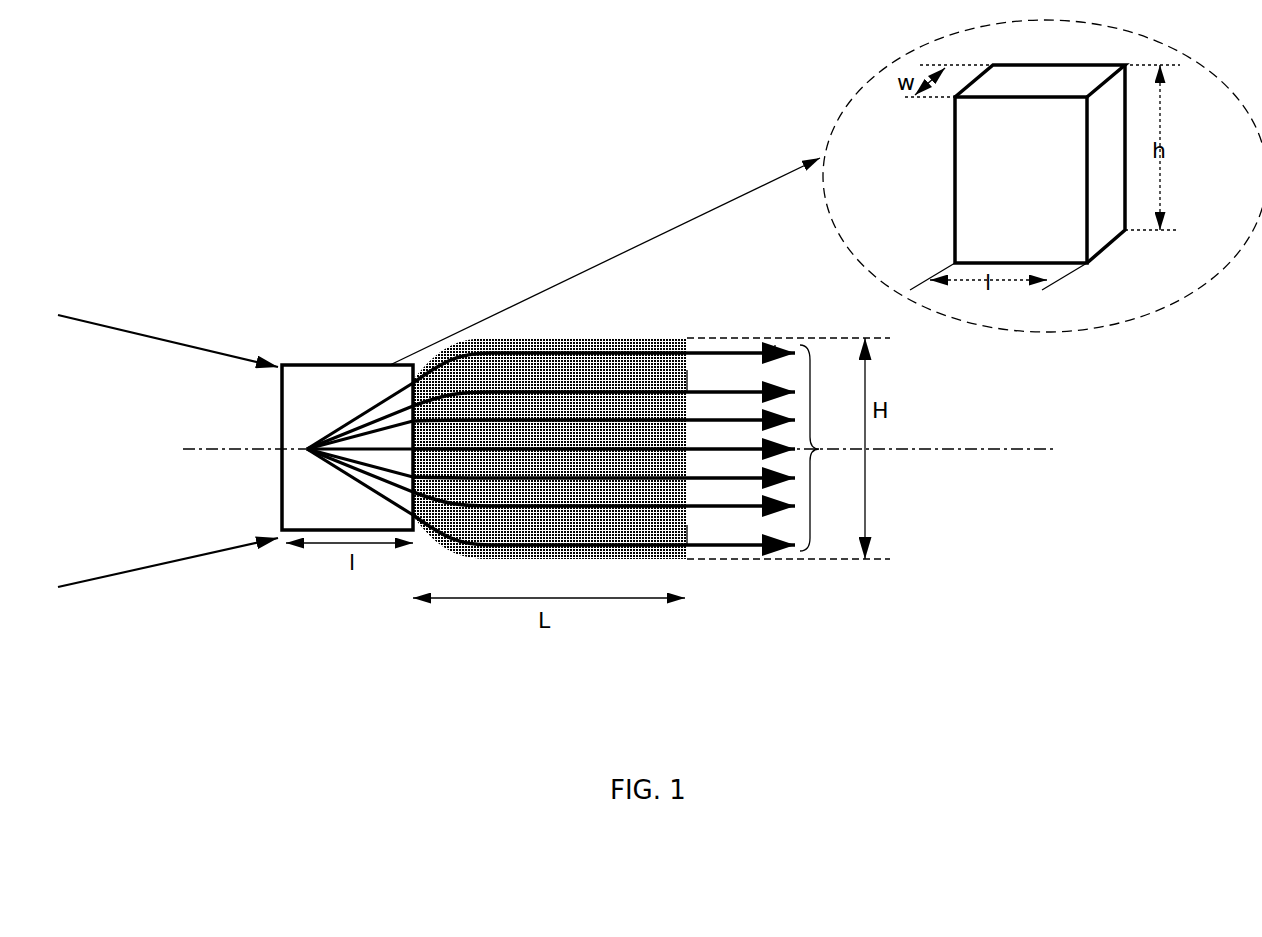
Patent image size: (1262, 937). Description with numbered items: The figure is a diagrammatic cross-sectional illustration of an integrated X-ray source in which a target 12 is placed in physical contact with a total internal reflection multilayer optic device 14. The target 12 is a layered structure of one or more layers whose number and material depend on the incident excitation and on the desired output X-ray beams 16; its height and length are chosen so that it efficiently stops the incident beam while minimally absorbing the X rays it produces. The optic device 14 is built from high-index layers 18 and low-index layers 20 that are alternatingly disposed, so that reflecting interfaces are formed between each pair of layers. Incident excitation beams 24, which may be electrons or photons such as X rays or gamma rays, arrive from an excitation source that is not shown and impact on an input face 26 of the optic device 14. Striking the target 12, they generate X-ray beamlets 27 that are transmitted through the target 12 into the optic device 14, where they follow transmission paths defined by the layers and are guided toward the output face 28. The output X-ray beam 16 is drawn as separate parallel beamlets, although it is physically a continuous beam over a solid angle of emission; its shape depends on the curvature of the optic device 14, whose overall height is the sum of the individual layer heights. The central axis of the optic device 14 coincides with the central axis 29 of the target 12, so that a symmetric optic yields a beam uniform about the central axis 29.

The target 12 is at (347, 447).
The total internal reflection multilayer optic device 14 is at (624, 334).
The output X-ray beam 16 is at (816, 455).
The high-index layers 18 is at (550, 449).
The low-index layers 20 is at (687, 380).
The incident excitation beams 24 is at (205, 353).
The input face 26 is at (403, 440).
The X-ray beamlets 27 is at (783, 392).
The output face 28 is at (688, 525).
The central axis 29 is at (1012, 448).